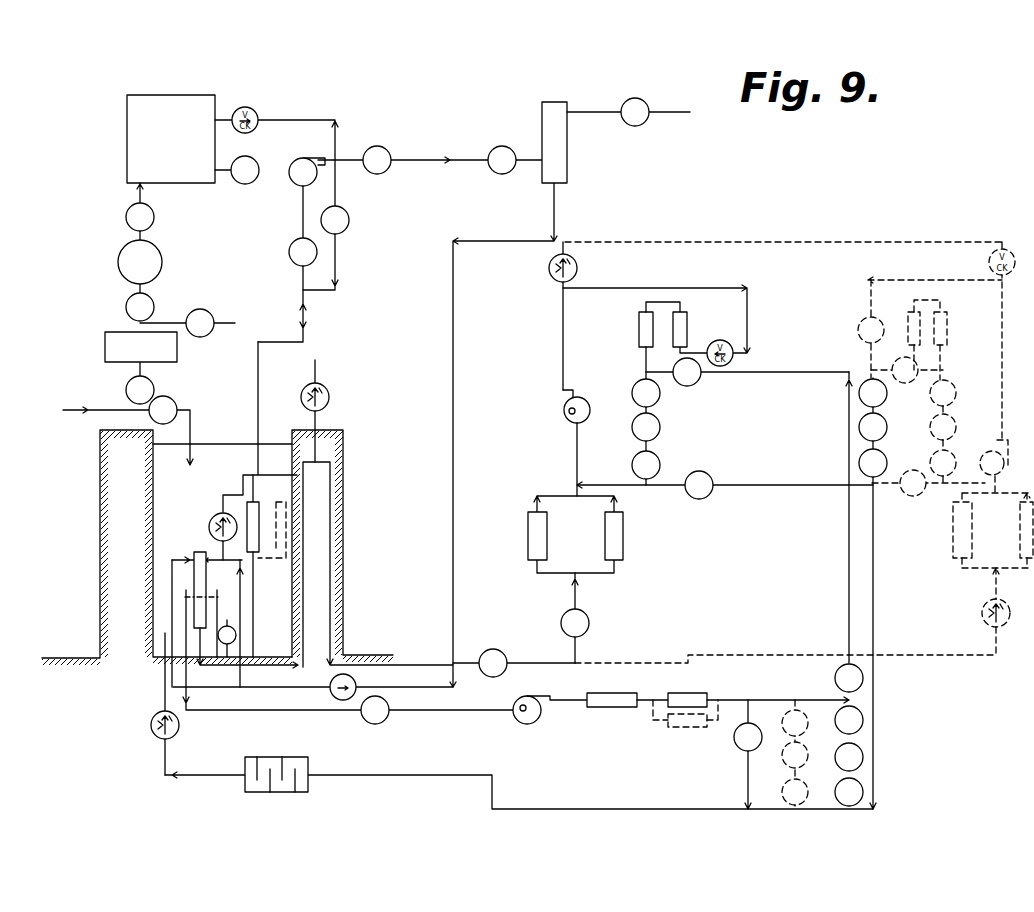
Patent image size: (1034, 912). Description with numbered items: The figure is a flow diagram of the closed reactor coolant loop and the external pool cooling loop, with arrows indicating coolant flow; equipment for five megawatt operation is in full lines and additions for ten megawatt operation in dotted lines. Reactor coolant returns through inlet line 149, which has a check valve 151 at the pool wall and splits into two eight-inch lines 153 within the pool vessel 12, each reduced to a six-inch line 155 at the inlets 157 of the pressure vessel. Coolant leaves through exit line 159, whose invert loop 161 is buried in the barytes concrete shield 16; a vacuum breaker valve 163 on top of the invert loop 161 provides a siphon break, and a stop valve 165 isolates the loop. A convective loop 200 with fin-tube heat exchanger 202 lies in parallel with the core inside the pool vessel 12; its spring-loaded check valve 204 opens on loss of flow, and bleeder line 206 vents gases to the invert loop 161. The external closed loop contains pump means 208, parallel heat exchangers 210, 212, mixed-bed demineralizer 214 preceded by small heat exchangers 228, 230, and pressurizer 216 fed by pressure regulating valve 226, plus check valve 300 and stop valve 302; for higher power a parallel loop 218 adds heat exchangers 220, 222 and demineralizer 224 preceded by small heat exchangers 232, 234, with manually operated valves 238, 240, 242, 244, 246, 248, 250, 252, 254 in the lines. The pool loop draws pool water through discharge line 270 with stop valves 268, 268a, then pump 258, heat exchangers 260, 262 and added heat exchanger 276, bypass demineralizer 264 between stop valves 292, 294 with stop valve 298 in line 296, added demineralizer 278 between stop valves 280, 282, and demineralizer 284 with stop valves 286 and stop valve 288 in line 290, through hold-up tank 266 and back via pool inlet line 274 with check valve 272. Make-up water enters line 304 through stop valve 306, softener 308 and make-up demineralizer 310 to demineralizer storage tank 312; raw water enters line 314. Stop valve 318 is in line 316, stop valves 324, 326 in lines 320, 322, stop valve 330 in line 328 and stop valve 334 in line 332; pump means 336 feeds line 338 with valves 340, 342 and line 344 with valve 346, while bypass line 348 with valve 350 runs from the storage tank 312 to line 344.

The pool vessel 12 is at (181, 513).
The barytes concrete shield 16 is at (343, 448).
The inlet line 149 is at (303, 688).
The check valve 151 is at (356, 686).
The 8-inch lines 153 is at (172, 591).
The 6-inch line 155 is at (188, 559).
The inlets 157 is at (206, 540).
The exit line 159 is at (296, 669).
The invert loop 161 is at (330, 531).
The vacuum breaker valve 163 is at (326, 389).
The stop valve 165 is at (500, 653).
The convective loop 200 is at (253, 600).
The fin-tube heat exchanger 202 is at (253, 506).
The spring-loaded check valve 204 is at (210, 516).
The bleeder line 206 is at (262, 475).
The centrifugal constant-speed pump means 208 is at (564, 413).
The heat exchanger 210 is at (538, 539).
The heat exchanger 212 is at (615, 547).
The mixed-bed demineralizer 214 is at (656, 434).
The pressurizer 216 is at (552, 152).
The parallel loop 218 is at (982, 606).
The heat exchanger 220 is at (953, 546).
The heat exchanger 222 is at (1020, 546).
The demineralizer 224 is at (952, 428).
The pressure regulating valve 226 is at (645, 103).
The small heat exchanger 228 is at (646, 331).
The small heat exchanger 230 is at (680, 331).
The small heat exchanger 232 is at (913, 318).
The small heat exchanger 234 is at (941, 331).
The manually operated valve 238 is at (695, 385).
The manually operated valve 240 is at (632, 393).
The manually operated valve 242 is at (660, 465).
The manually operated valve 244 is at (710, 490).
The manually operated valve 246 is at (858, 336).
The manually operated valve 248 is at (892, 370).
The manually operated valve 250 is at (952, 387).
The manually operated valve 252 is at (930, 463).
The manually operated valve 254 is at (922, 497).
The pump 258 is at (514, 717).
The heat exchanger 260 is at (587, 701).
The heat exchanger 262 is at (705, 696).
The bypass demineralizer 264 is at (865, 758).
The hold-up tank 266 is at (305, 763).
The stop valve 268 is at (386, 717).
The stop valve 268a is at (742, 744).
The pool discharge line 270 is at (303, 711).
The check valve 272 is at (151, 728).
The pool inlet line 274 is at (165, 771).
The heat exchanger 276 is at (680, 728).
The demineralizer 278 is at (783, 765).
The stop valve 280 is at (783, 716).
The stop valve 282 is at (782, 793).
The demineralizer 284 is at (859, 428).
The stop valves 286 is at (859, 394).
The stop valve 288 is at (859, 464).
The line 290 is at (873, 626).
The stop valve 292 is at (865, 723).
The stop valve 294 is at (865, 793).
The line 296 is at (849, 615).
The stop valve 298 is at (835, 679).
The check valve 300 is at (577, 268).
The stop valve 302 is at (589, 623).
The line 304 is at (235, 323).
The stop valve 306 is at (208, 311).
The softener 308 is at (165, 343).
The make-up demineralizer 310 is at (118, 262).
The demineralizer storage tank 312 is at (143, 138).
The line 314 is at (68, 410).
The line 316 is at (140, 370).
The stop valve 318 is at (154, 392).
The line 320 is at (140, 289).
The line 322 is at (140, 236).
The stop valve 324 is at (140, 314).
The stop valve 326 is at (126, 217).
The line 328 is at (192, 446).
The stop valve 330 is at (177, 408).
The line 332 is at (293, 181).
The stop valve 334 is at (265, 156).
The centrifugal constant-speed pump means 336 is at (303, 158).
The line 338 is at (420, 160).
The manually operated valve 340 is at (377, 146).
The manually operated valve 342 is at (508, 148).
The line 344 is at (303, 273).
The manually operated valve 346 is at (289, 251).
The bypass line 348 is at (335, 262).
The manually operated valve 350 is at (349, 218).